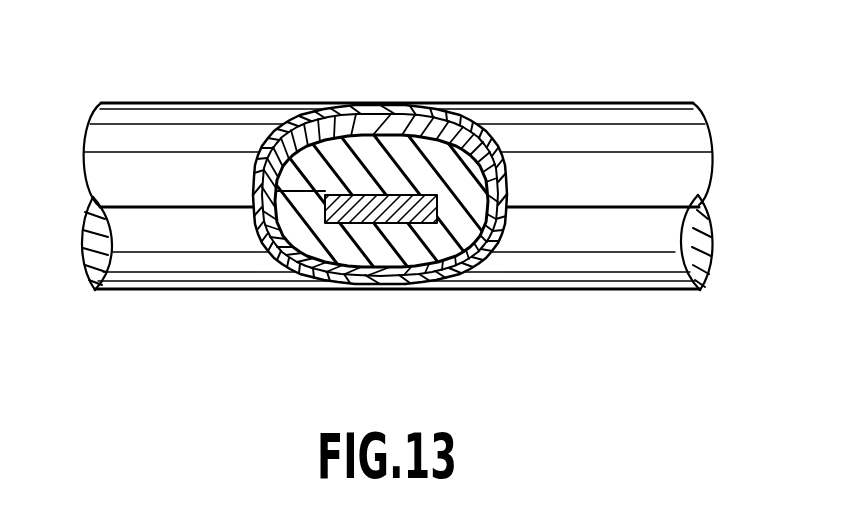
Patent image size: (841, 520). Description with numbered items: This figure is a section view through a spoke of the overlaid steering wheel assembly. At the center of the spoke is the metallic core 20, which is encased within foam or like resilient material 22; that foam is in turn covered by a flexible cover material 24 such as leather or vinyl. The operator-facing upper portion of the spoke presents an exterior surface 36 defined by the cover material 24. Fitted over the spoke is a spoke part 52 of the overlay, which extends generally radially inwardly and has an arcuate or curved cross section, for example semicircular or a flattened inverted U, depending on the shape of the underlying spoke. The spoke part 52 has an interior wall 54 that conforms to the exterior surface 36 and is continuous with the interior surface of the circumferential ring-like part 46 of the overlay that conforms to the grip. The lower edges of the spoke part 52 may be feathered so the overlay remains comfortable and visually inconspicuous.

The core 20 is at (387, 215).
The resilient material 22 is at (452, 240).
The cover material 24 is at (325, 284).
The exterior surface 36 is at (340, 105).
The ring-like part 46 is at (183, 105).
The spoke part 52 is at (457, 113).
The interior wall 54 is at (430, 125).